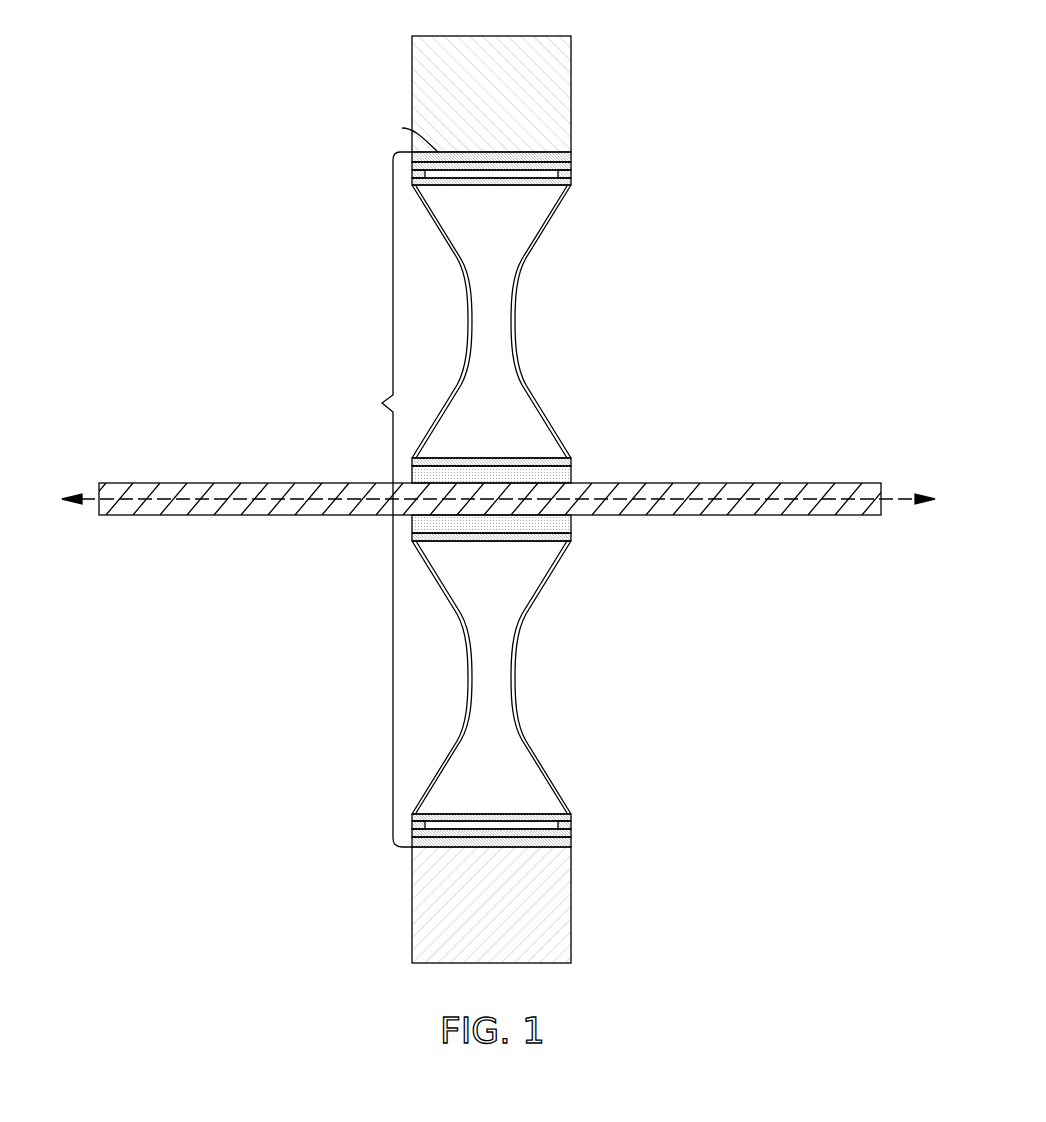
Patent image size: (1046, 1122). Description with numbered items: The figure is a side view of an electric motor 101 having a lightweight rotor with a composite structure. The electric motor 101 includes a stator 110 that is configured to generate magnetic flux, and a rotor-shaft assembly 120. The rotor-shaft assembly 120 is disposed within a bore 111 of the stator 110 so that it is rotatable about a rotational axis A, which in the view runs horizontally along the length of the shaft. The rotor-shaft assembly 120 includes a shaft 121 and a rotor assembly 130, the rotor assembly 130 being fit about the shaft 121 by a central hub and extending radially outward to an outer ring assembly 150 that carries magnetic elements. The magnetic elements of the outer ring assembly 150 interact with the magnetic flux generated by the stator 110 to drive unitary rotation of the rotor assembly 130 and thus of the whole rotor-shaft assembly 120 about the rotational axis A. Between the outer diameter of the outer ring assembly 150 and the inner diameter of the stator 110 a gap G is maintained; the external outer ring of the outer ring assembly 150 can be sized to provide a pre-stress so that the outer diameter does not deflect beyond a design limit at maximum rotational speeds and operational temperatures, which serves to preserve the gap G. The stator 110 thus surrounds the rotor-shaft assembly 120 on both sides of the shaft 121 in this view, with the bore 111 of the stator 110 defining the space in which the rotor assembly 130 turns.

The electric motor 101 is at (322, 95).
The stator 110 is at (572, 53).
The outer ring assembly 150 is at (554, 152).
The gap G is at (586, 157).
The rotor assembly 130 is at (590, 295).
The rotor-shaft assembly 120 is at (585, 474).
The shaft 121 is at (138, 483).
The rotational axis A is at (92, 503).
The bore 111 is at (381, 499).